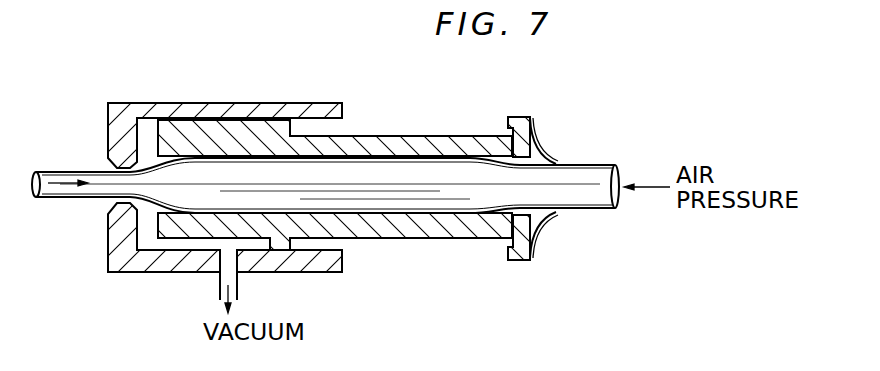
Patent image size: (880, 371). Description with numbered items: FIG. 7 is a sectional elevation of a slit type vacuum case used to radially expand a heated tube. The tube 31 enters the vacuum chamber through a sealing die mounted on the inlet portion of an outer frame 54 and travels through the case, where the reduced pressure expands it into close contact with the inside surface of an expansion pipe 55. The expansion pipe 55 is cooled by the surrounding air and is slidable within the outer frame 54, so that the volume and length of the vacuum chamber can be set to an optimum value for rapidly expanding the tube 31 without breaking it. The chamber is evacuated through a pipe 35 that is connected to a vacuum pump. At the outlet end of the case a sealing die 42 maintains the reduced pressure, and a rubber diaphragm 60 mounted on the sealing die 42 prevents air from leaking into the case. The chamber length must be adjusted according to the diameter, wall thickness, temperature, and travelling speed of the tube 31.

The tube 31 is at (71, 196).
The pipe 35 is at (220, 283).
The sealing die 42 is at (512, 117).
The outer frame 54 is at (181, 110).
The expansion pipe 55 is at (352, 142).
The rubber diaphragm 60 is at (540, 138).